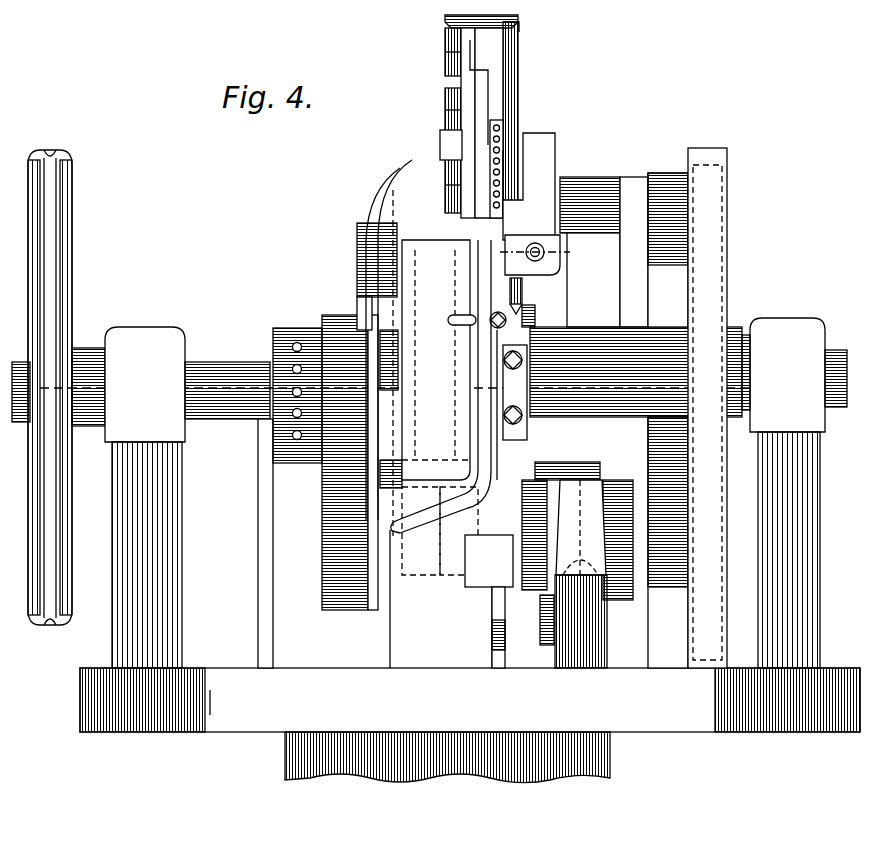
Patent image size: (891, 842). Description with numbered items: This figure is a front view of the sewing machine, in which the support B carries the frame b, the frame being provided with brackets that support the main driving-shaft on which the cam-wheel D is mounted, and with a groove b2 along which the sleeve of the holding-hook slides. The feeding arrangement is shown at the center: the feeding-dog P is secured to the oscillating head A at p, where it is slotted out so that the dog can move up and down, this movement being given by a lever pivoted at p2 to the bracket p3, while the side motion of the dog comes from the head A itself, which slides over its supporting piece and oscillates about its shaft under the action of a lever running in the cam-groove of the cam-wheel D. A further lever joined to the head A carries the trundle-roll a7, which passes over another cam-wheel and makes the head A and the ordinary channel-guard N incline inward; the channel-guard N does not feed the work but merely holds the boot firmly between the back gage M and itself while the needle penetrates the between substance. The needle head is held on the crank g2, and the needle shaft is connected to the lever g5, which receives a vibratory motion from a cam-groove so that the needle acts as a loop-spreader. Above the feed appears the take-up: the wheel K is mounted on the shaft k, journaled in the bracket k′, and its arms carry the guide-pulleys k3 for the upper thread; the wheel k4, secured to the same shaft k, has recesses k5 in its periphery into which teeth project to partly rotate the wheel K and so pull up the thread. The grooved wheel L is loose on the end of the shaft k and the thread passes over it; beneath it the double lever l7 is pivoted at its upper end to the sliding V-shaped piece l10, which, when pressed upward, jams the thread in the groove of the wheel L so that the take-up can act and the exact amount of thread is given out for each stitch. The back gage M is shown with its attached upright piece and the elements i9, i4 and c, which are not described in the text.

The bracket k′ is at (478, 22).
The guide-pulleys k3 is at (456, 52).
The take-up wheel K is at (452, 138).
The shaft k is at (472, 172).
The wheel k4 is at (496, 124).
The grooved wheel L is at (512, 112).
The recesses k5 is at (500, 157).
The pivot p2 is at (548, 176).
The trundle-roll a7 is at (600, 200).
The bracket p3 is at (535, 239).
The piece l10 is at (522, 305).
The double lever l7 is at (536, 323).
The cam-wheel D is at (668, 420).
The oscillating head A is at (708, 342).
The groove b2 is at (465, 493).
The collar c is at (222, 402).
The slotted attachment point p is at (490, 323).
The feeding-dog P is at (490, 392).
The gear i9 is at (272, 432).
The gear i4 is at (340, 490).
The lever g5 is at (588, 465).
The crank g2 is at (548, 474).
The back gage M is at (432, 528).
The channel-guard N is at (466, 510).
The frame b is at (470, 700).
The support B is at (447, 757).